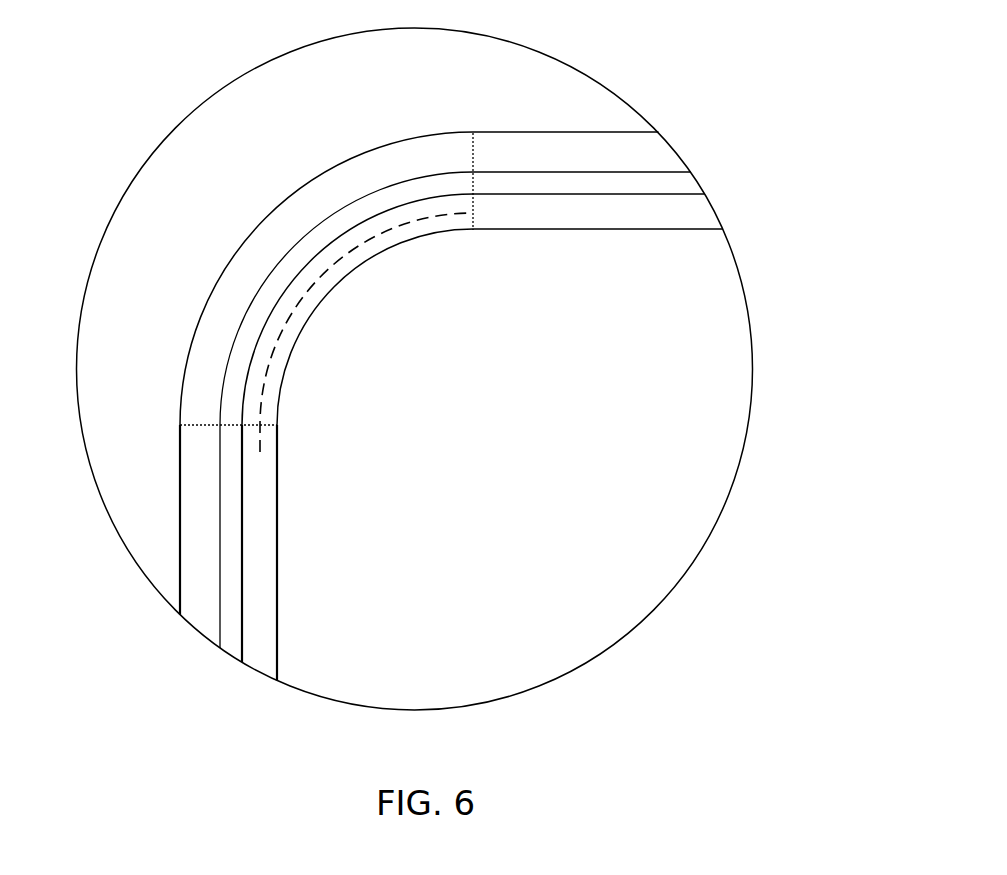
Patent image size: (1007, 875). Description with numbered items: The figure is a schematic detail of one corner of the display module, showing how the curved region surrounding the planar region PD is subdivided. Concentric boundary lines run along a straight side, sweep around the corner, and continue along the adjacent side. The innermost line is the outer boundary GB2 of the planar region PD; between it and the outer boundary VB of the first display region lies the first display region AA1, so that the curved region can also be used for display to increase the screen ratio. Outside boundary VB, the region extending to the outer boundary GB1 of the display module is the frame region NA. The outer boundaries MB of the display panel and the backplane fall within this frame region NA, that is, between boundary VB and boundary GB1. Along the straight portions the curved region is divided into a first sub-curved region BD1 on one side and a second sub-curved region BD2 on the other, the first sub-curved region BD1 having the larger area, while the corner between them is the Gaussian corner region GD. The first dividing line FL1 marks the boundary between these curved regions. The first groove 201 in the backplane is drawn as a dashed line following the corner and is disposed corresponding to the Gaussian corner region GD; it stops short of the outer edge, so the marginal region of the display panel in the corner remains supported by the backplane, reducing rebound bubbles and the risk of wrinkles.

The planar region PD is at (675, 482).
The outer boundary of the display module GB1 is at (197, 596).
The frame region NA is at (212, 452).
The outer boundaries of the display panel and the backplane MB is at (236, 604).
The first sub-curved region BD1 is at (233, 527).
The Gaussian corner region GD is at (307, 265).
The outer boundary of the first display region VB is at (259, 580).
The second sub-curved region BD2 is at (595, 185).
The first dividing line FL1 is at (478, 157).
The first groove 201 is at (415, 220).
The outer boundary of the planar region GB2 is at (294, 568).
The first display region AA1 is at (258, 475).